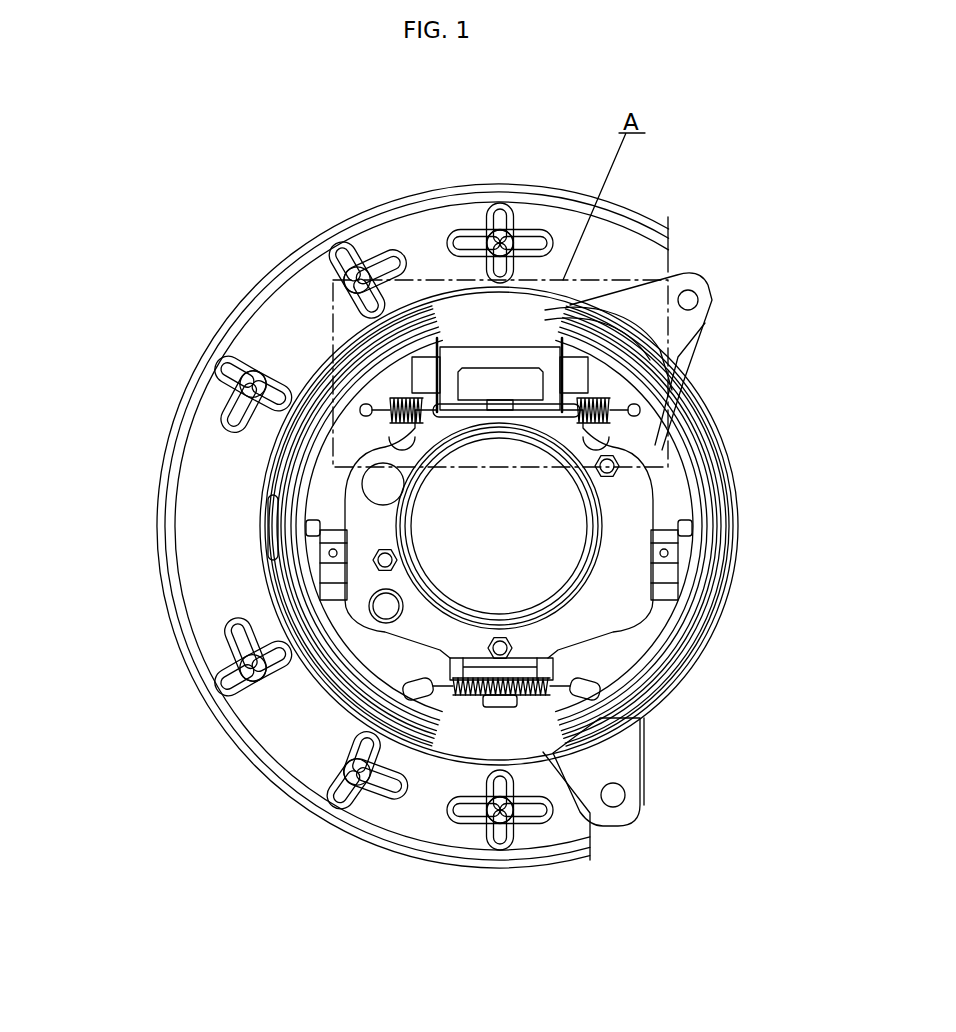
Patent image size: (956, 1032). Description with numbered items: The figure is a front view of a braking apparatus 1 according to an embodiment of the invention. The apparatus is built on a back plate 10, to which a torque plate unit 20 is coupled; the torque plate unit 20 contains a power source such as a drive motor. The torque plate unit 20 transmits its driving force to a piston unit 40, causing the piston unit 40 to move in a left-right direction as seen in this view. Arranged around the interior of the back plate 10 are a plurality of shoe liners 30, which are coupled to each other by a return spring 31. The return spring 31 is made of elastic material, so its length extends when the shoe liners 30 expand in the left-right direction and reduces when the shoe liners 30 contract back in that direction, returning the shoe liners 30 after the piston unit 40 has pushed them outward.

The braking apparatus 1 is at (662, 208).
The back plate 10 is at (208, 540).
The torque plate unit 20 is at (530, 362).
The shoe liners 30 is at (392, 650).
The return spring 31 is at (617, 420).
The piston unit 40 is at (424, 364).